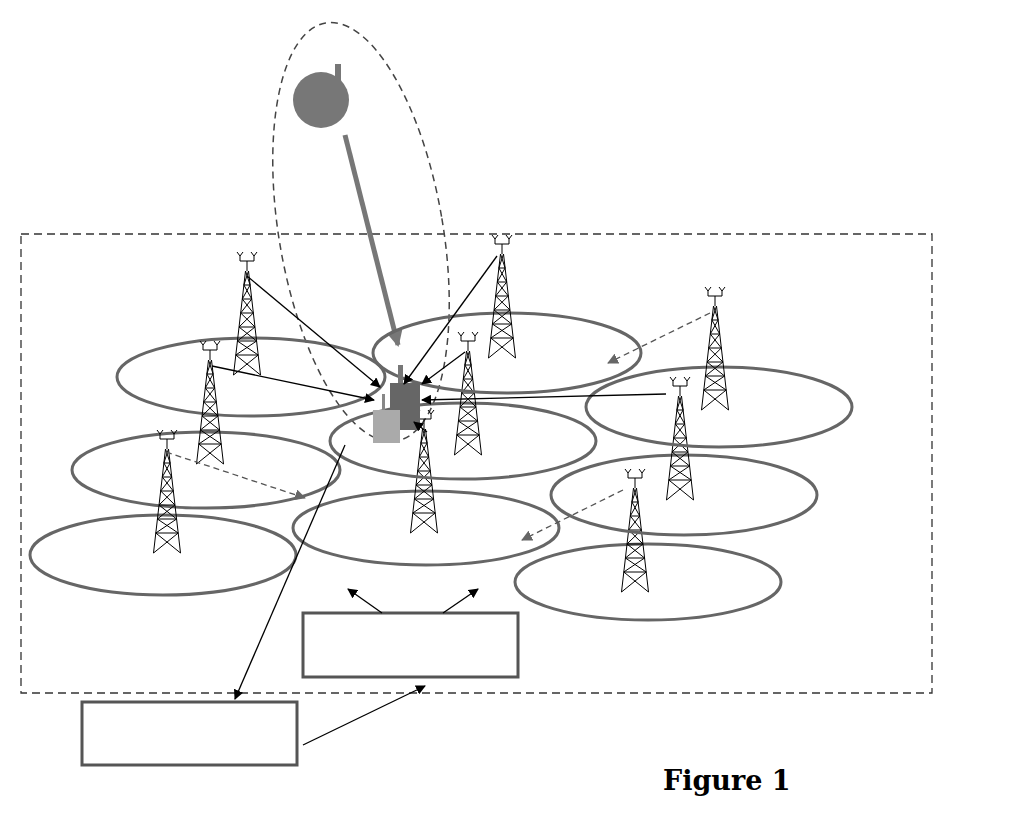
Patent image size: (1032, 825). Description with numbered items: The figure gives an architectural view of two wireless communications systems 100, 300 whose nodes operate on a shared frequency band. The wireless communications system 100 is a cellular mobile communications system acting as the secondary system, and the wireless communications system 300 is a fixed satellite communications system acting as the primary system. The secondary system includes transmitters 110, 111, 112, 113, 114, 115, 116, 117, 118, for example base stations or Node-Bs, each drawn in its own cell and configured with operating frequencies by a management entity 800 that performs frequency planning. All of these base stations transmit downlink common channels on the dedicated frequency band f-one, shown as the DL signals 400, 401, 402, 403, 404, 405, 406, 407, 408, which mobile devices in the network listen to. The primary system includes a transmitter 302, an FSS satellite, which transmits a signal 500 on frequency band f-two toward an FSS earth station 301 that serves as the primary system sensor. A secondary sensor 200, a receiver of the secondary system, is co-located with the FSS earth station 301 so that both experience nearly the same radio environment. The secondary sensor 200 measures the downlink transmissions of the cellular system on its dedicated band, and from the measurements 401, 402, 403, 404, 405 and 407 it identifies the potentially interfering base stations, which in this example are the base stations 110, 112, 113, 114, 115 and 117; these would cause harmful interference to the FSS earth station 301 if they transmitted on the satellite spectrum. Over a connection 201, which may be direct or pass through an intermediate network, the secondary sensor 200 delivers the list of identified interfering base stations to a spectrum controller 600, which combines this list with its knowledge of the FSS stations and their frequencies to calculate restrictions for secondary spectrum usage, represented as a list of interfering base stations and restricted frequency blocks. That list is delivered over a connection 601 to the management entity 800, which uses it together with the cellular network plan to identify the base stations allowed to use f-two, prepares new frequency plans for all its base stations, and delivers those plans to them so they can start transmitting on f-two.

The wireless communications system 100 is at (476, 455).
The transmitter 110 is at (163, 509).
The transmitter 111 is at (206, 416).
The transmitter 112 is at (251, 333).
The transmitter 113 is at (426, 487).
The transmitter 114 is at (463, 400).
The transmitter 115 is at (507, 314).
The transmitter 116 is at (648, 539).
The transmitter 117 is at (684, 452).
The transmitter 118 is at (719, 363).
The secondary sensor 200 is at (394, 419).
The connection 201 is at (286, 572).
The wireless communications system 300 is at (361, 231).
The FSS earth station 301 is at (401, 368).
The transmitter 302 is at (321, 104).
The DL signal 400 is at (235, 475).
The DL signal 401 is at (293, 383).
The DL signal 402 is at (313, 331).
The DL signal 403 is at (407, 447).
The DL signal 404 is at (443, 368).
The DL signal 405 is at (450, 319).
The DL signal 406 is at (572, 515).
The DL signal 407 is at (544, 389).
The DL signal 408 is at (659, 338).
The signal 500 is at (371, 240).
The spectrum controller 600 is at (189, 748).
The connection 601 is at (364, 715).
The management entity 800 is at (410, 644).